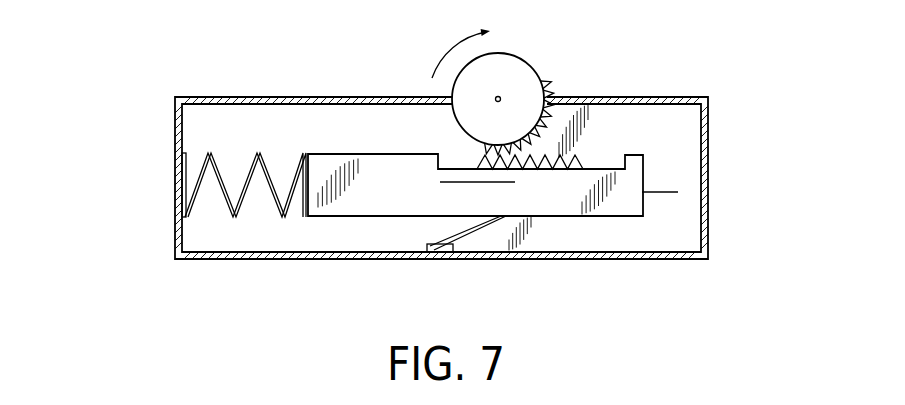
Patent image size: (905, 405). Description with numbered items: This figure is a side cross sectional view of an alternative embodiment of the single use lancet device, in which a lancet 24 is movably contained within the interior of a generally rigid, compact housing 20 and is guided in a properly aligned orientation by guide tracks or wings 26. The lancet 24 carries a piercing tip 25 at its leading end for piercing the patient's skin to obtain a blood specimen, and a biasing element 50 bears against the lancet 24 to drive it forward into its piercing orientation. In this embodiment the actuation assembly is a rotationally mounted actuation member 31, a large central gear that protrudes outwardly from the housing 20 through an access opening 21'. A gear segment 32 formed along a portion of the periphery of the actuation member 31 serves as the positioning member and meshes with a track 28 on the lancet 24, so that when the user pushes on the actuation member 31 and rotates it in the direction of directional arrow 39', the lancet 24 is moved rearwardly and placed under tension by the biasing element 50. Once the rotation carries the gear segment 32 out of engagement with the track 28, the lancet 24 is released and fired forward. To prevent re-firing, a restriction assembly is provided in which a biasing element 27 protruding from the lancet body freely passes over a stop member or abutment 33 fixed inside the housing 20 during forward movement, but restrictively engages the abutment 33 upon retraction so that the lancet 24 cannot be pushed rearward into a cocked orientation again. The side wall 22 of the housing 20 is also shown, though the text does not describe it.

The housing 20 is at (733, 113).
The access opening 21' is at (624, 65).
The side wall 22 is at (708, 190).
The lancet 24 is at (568, 206).
The piercing tip 25 is at (662, 192).
The guide tracks or wings 26 is at (448, 183).
The biasing element 27 is at (488, 227).
The track 28 is at (580, 162).
The actuation member 31 is at (513, 65).
The gear segment 32 is at (547, 80).
The stop member or abutment 33 is at (455, 252).
The directional arrow 39' is at (427, 44).
The biasing element 50 is at (182, 177).